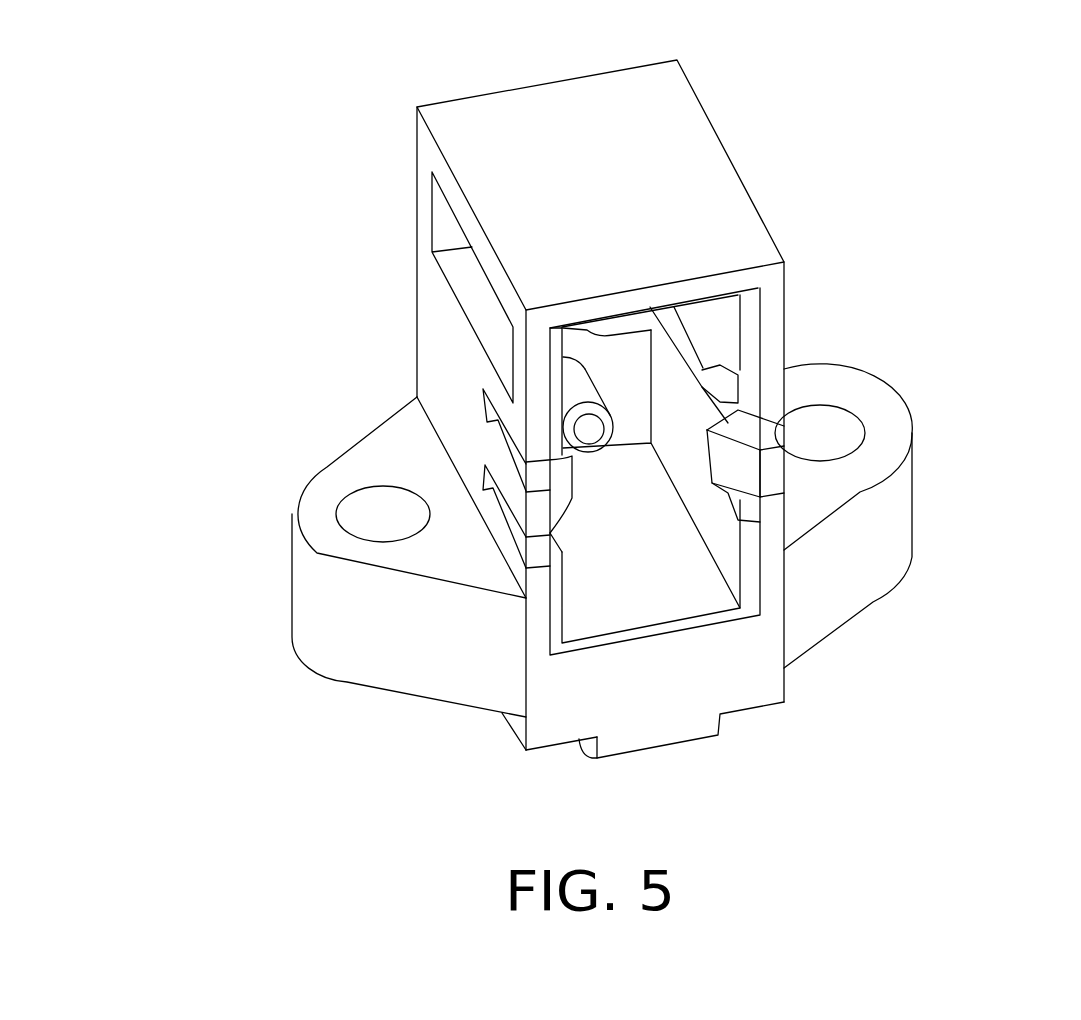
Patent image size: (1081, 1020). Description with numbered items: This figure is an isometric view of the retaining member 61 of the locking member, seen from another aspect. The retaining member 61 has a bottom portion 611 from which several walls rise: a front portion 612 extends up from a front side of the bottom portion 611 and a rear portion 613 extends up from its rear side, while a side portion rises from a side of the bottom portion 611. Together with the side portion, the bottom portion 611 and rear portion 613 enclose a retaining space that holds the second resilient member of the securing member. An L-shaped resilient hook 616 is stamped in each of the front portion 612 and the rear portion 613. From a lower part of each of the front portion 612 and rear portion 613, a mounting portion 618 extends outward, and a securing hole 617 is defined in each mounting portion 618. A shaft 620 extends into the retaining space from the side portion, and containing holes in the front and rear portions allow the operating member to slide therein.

The retaining member 61 is at (350, 373).
The bottom portion 611 is at (637, 555).
The front portion 612 is at (723, 535).
The rear portion 613 is at (440, 302).
The L-shaped resilient hook 616 is at (742, 468).
The securing hole 617 is at (377, 518).
The mounting portion 618 is at (390, 620).
The shaft 620 is at (580, 388).